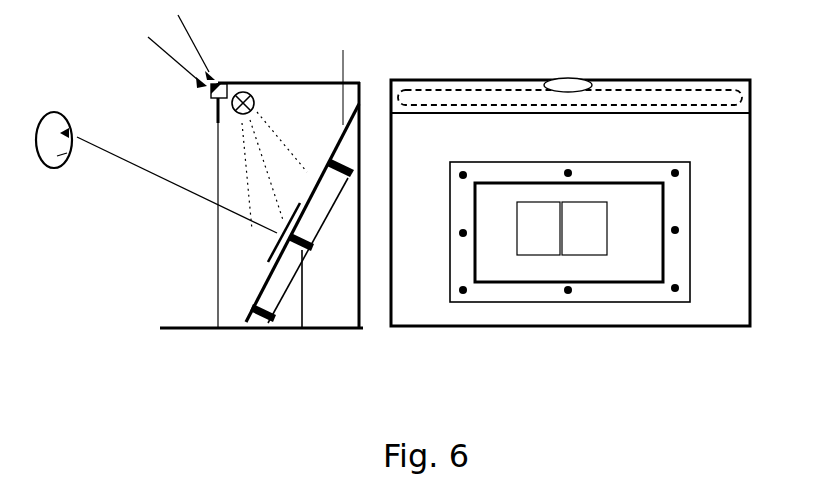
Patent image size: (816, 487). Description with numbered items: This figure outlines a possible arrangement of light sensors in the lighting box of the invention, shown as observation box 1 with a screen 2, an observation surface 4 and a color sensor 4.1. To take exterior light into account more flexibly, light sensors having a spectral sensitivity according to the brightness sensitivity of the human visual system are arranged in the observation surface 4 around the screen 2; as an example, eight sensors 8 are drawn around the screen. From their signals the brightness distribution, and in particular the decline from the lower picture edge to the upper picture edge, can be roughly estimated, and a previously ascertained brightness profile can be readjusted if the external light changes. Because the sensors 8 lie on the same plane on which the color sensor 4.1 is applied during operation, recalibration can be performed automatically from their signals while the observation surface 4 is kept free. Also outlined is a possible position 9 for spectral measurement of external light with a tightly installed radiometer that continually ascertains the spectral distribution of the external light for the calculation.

The observation box 1 is at (363, 328).
The screen 2 is at (502, 212).
The observation surface 4 is at (435, 172).
The color sensor 4.1 is at (585, 225).
The sensors 8 is at (342, 182).
The position for spectral measurement of external light 9 is at (218, 77).